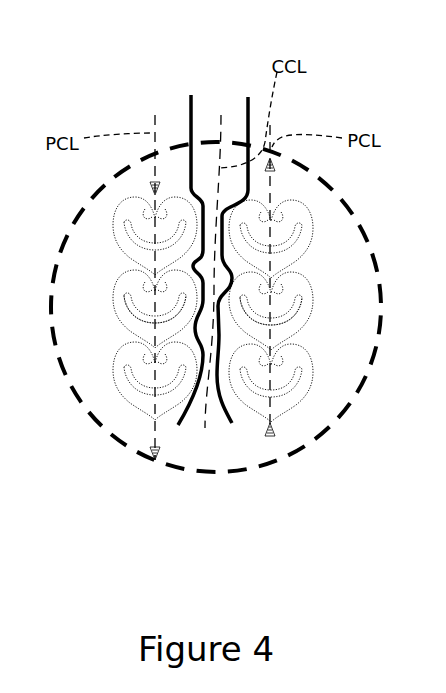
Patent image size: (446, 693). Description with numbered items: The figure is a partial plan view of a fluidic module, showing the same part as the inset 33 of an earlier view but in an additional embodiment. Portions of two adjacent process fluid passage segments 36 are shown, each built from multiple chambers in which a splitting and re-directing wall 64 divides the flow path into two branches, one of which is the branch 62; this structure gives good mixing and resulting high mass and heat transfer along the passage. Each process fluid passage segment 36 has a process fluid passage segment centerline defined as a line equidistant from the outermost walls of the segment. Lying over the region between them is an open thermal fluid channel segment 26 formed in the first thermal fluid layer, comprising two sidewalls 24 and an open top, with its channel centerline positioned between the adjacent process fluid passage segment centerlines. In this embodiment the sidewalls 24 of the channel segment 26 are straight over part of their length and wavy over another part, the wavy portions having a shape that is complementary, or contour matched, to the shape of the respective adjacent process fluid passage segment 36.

The sidewalls 24 is at (191, 137).
The open thermal fluid channel segment 26 is at (221, 110).
The inset 33 is at (198, 558).
The process fluid passage segment 36 is at (155, 107).
The branch 62 is at (130, 287).
The splitting and re-directing wall 64 is at (137, 303).